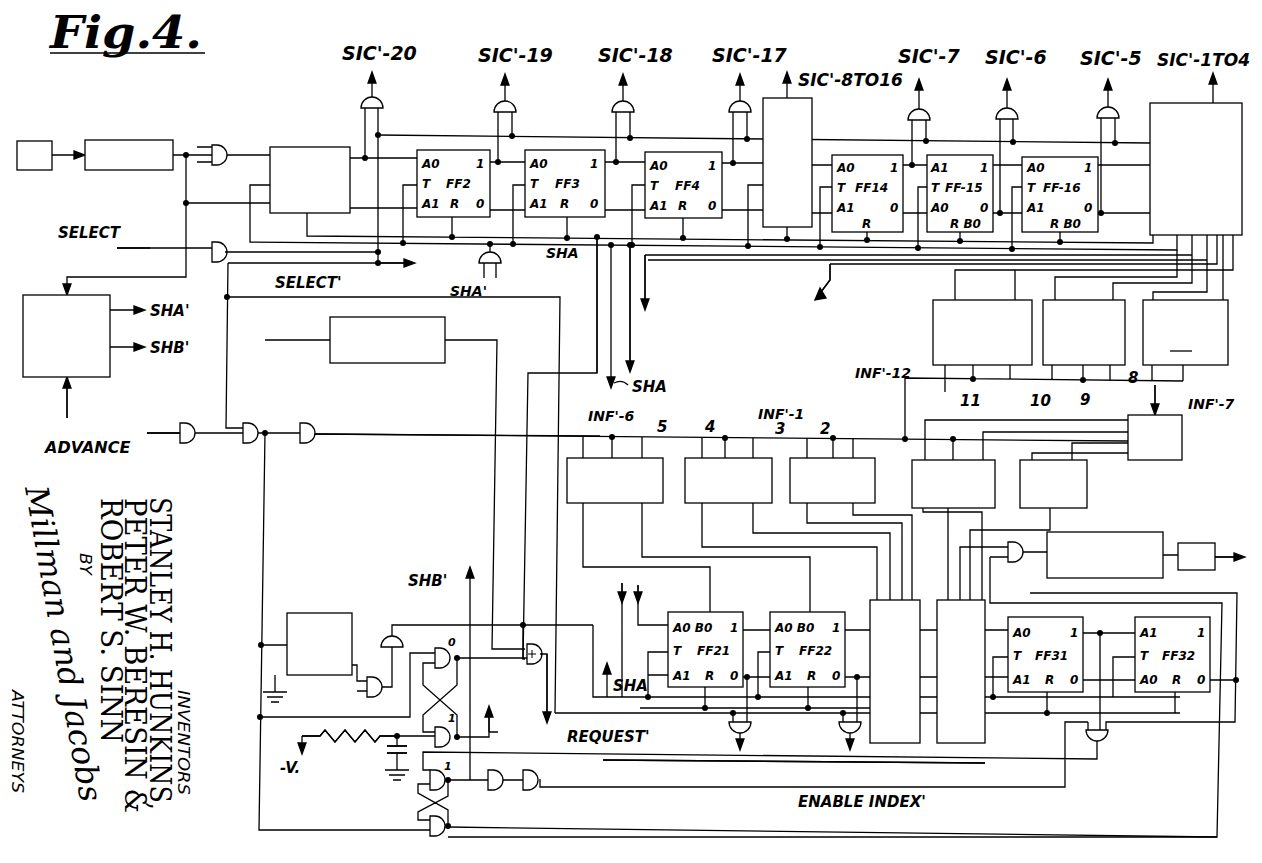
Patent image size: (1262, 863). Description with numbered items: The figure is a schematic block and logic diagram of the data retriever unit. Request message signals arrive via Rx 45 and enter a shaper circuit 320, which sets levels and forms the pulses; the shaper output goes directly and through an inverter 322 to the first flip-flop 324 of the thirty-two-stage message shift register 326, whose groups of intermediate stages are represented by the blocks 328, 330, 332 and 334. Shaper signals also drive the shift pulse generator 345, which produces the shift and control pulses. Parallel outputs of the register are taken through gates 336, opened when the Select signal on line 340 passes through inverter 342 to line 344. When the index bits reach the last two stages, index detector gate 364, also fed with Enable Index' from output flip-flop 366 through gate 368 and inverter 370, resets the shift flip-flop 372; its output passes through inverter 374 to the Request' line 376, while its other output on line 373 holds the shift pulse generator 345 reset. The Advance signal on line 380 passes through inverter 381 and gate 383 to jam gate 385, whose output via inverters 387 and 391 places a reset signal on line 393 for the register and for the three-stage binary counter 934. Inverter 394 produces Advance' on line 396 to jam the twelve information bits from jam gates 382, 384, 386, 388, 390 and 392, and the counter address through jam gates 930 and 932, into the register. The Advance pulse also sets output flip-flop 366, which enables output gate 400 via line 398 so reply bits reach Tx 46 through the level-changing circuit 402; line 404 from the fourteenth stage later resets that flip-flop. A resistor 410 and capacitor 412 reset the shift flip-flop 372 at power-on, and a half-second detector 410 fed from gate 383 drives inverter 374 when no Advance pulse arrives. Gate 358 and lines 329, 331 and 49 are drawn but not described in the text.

The Rx 45 is at (35, 142).
The shaper circuit 320 is at (104, 170).
The inverter 322 is at (214, 148).
The first flip-flop 324 is at (294, 148).
The message shift register 326 is at (355, 100).
The gates 336 is at (383, 101).
The block FF-5 to FF-13 328 is at (812, 129).
The block FF-17 to FF-20 330 is at (1195, 103).
The inverter 342 is at (232, 248).
The Select line 340 is at (114, 249).
The shift pulse generator 345 is at (42, 286).
The line 344 is at (724, 738).
The gate 358 is at (498, 278).
The reset line 393 is at (597, 306).
The line 331 is at (647, 290).
The line 329 is at (631, 346).
The line 404 is at (832, 278).
The jam gate 392 is at (982, 332).
The jam gate 390 is at (1084, 332).
The jam gate 388 is at (1185, 332).
The line 373 is at (67, 400).
The Advance line 380 is at (167, 432).
The inverter 381 is at (188, 424).
The gate 383 is at (250, 443).
The inverter 394 is at (304, 426).
The Advance' line 396 is at (469, 432).
The resistor / half-second detector 410 is at (448, 318).
The jam gate 386 is at (634, 507).
The jam gate 384 is at (736, 504).
The jam gate 382 is at (810, 508).
The jam gate 930 is at (912, 473).
The jam gate 932 is at (1087, 490).
The three-stage binary counter 934 is at (1155, 437).
The level-changing circuit 402 is at (1116, 533).
The Tx 46 is at (1196, 556).
The output line 49 is at (1240, 554).
The output gate 400 is at (1016, 564).
The jam gate 385 is at (328, 598).
The inverter 391 is at (384, 636).
The inverter 387 is at (367, 690).
The shift flip-flop 372 is at (430, 689).
The inverter 374 is at (528, 661).
The Request' line 376 is at (547, 708).
The block FF-23 to FF-26 332 is at (870, 600).
The block FF-27 to FF-30 334 is at (985, 737).
The index detector gate 364 is at (1108, 741).
The output flip-flop 366 is at (397, 807).
The gate 368 is at (496, 790).
The inverter 370 is at (540, 789).
The line 398 is at (758, 830).
The capacitor 412 is at (392, 762).